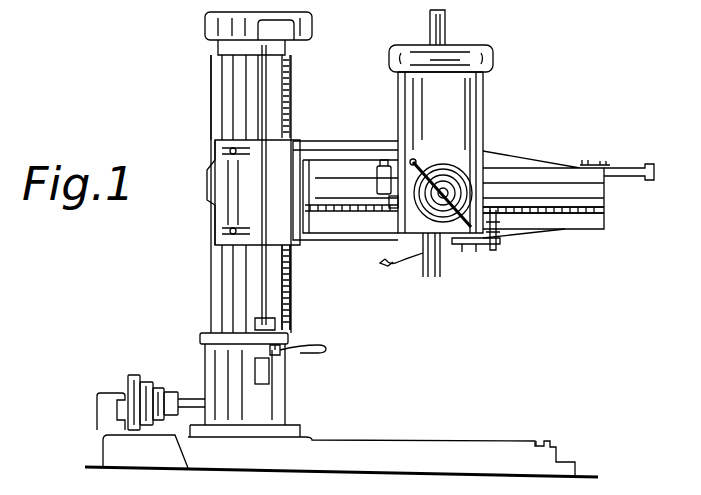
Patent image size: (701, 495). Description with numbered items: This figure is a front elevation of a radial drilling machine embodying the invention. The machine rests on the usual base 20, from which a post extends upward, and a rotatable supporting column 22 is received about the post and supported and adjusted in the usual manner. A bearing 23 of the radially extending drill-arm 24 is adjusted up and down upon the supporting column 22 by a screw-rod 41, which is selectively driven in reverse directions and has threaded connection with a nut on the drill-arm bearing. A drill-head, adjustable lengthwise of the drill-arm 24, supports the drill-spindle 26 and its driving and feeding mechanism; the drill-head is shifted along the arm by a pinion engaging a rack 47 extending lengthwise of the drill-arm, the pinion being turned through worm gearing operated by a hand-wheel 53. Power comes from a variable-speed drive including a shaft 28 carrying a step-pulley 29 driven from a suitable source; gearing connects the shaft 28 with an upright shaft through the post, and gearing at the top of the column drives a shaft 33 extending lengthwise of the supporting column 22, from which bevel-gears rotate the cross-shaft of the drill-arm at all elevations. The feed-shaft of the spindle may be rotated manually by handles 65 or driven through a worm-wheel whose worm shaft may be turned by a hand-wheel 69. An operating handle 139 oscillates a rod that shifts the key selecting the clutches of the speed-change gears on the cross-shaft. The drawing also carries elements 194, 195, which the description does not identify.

The base 20 is at (272, 467).
The supporting column 22 is at (233, 286).
The shaft 33 is at (214, 124).
The screw-rod 41 is at (285, 305).
The bearing 23 is at (230, 197).
The drill-arm 24 is at (528, 237).
The rack 47 is at (603, 208).
The arm clamp 194 is at (379, 166).
The clamp member 195 is at (395, 203).
The drill-spindle 26 is at (482, 107).
The handles 65 is at (428, 166).
The hand-wheel 69 is at (464, 245).
The hand-wheel 53 is at (493, 245).
The operating handle 139 is at (391, 267).
The step-pulley 29 is at (150, 384).
The shaft 28 is at (188, 398).